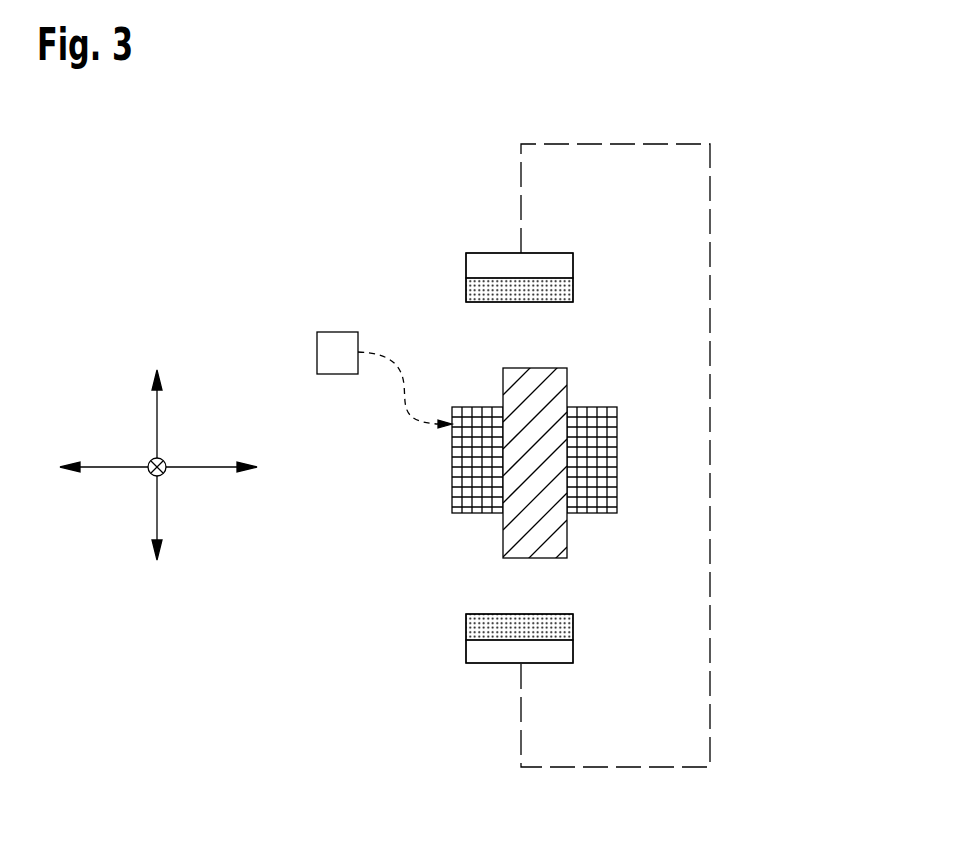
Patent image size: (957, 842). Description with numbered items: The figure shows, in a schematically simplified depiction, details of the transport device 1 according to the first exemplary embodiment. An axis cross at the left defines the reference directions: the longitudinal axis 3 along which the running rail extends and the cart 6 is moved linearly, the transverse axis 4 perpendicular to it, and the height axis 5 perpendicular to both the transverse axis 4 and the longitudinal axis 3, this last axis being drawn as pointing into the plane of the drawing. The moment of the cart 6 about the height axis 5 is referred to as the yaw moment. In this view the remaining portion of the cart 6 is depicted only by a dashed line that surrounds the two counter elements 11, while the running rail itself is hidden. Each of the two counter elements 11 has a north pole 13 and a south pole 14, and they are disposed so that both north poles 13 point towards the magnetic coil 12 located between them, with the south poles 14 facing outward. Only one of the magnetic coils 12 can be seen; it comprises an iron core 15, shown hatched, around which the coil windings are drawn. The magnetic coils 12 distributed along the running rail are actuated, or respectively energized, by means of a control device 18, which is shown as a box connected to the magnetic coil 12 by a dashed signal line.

The transport device 1 is at (200, 715).
The longitudinal axis 3 is at (110, 468).
The transverse axis 4 is at (158, 421).
The height axis 5 is at (148, 458).
The cart 6 is at (712, 193).
The counter elements 11 is at (519, 461).
The magnetic coil 12 is at (429, 489).
The north pole 13 is at (562, 292).
The south pole 14 is at (565, 267).
The iron core 15 is at (510, 540).
The control device 18 is at (337, 347).